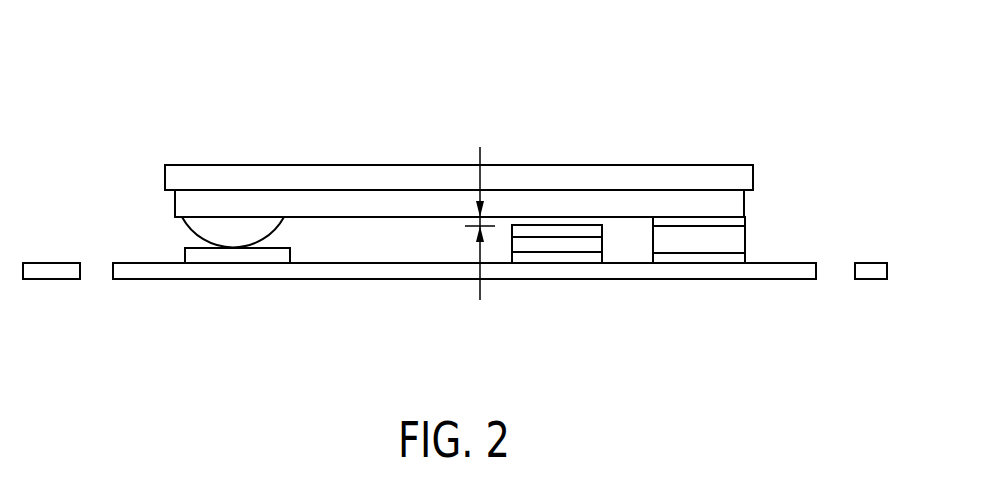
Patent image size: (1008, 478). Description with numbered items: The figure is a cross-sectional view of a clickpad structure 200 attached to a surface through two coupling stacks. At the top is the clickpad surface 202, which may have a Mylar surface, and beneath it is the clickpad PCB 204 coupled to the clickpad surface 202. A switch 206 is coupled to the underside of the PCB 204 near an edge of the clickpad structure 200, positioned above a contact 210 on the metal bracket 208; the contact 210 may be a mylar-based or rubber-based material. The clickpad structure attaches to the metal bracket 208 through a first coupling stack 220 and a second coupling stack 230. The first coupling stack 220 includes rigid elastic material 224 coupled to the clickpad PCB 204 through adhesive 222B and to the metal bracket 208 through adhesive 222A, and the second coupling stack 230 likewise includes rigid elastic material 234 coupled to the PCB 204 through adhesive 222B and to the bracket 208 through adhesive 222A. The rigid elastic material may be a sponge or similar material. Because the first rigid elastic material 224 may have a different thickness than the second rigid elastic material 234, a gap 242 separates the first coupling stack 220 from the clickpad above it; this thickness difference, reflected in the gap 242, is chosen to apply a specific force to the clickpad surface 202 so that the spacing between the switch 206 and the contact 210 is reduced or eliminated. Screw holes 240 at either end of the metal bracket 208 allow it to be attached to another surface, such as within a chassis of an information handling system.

The clickpad structure 200 is at (166, 101).
The clickpad surface 202 is at (166, 173).
The clickpad PCB 204 is at (177, 212).
The switch 206 is at (275, 225).
The metal bracket 208 is at (163, 272).
The contact 210 is at (265, 255).
The first coupling stack 220 is at (555, 289).
The adhesive 222A is at (520, 257).
The adhesive 222B is at (562, 226).
The rigid elastic material 224 is at (595, 252).
The second coupling stack 230 is at (700, 289).
The rigid elastic material 234 is at (737, 250).
The screw hole 240 is at (92, 274).
The gap 242 is at (478, 157).